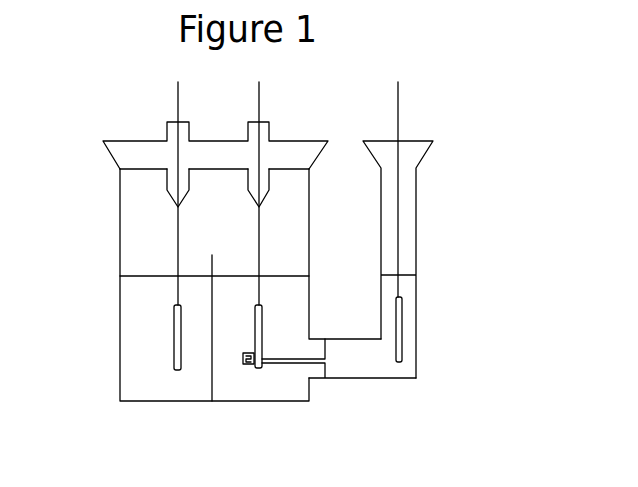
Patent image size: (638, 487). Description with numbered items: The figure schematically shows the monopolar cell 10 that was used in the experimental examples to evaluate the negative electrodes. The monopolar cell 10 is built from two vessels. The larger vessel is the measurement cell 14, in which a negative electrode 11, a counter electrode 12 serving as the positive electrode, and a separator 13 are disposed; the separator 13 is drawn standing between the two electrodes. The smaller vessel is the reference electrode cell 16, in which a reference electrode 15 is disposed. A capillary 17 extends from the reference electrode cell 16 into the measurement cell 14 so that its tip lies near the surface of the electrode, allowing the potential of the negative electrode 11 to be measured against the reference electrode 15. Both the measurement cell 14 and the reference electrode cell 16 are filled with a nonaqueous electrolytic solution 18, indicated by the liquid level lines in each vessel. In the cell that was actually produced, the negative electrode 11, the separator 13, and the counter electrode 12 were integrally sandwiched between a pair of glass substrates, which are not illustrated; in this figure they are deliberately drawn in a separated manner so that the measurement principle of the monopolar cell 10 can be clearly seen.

The monopolar cell 10 is at (47, 113).
The negative electrode 11 is at (262, 368).
The counter electrode (positive electrode) 12 is at (174, 333).
The separator 13 is at (212, 370).
The measurement cell 14 is at (120, 231).
The reference electrode 15 is at (402, 329).
The reference electrode cell 16 is at (416, 232).
The capillary 17 is at (283, 364).
The nonaqueous electrolytic solution 18 is at (143, 377).